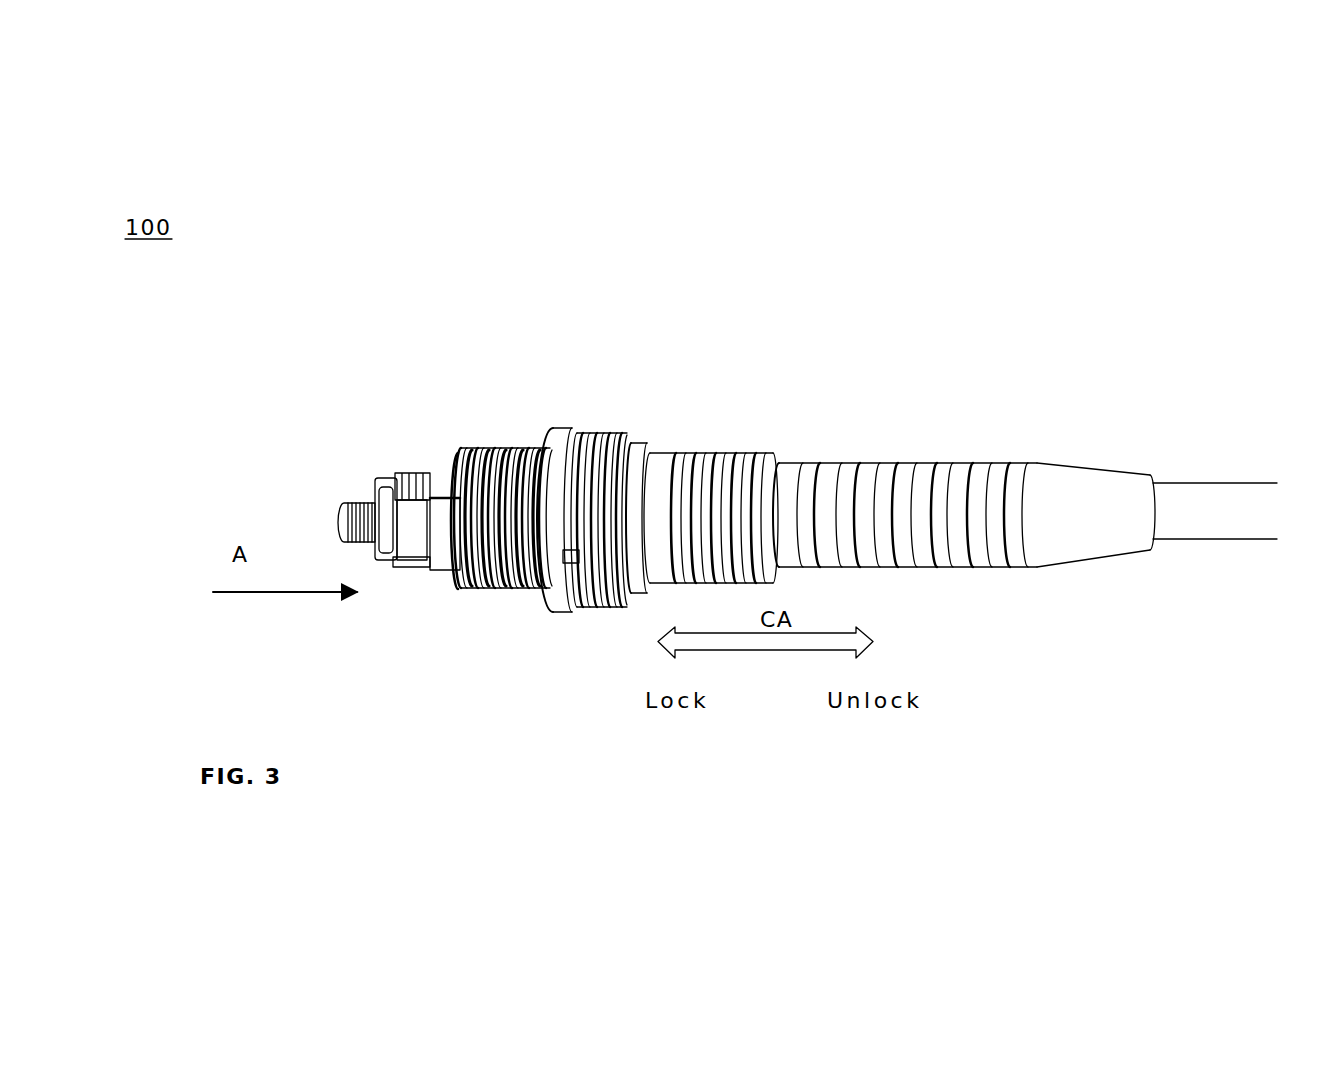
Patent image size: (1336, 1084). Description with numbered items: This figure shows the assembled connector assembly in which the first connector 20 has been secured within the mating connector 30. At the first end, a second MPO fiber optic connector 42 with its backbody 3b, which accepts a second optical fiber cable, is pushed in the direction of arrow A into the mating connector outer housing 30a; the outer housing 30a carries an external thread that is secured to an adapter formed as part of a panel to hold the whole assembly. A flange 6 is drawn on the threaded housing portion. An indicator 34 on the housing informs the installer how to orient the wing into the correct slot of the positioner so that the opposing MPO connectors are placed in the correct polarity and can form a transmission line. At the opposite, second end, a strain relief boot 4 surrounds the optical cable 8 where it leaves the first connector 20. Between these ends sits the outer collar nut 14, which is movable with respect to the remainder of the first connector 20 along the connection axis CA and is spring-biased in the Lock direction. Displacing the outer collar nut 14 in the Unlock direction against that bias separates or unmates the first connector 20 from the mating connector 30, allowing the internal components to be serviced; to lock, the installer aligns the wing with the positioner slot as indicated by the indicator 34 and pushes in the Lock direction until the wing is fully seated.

The backbody 3b is at (333, 507).
The second MPO fiber optic connector 42 is at (410, 472).
The mating connector 30 is at (547, 535).
The outer housing 30a is at (501, 470).
The flange 6 is at (553, 426).
The indicator 34 is at (579, 547).
The outer collar nut 14 is at (685, 527).
The strain relief boot 4 is at (907, 543).
The optical cable 8 is at (1193, 516).
The first connector 20 is at (1123, 425).